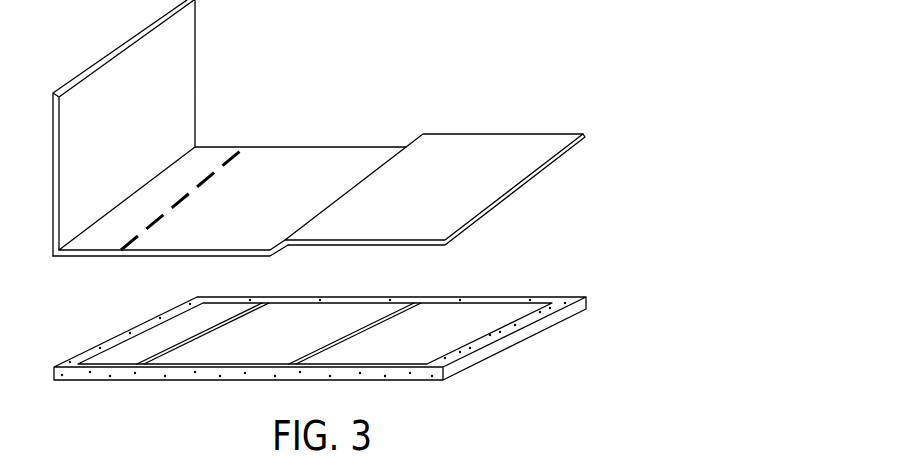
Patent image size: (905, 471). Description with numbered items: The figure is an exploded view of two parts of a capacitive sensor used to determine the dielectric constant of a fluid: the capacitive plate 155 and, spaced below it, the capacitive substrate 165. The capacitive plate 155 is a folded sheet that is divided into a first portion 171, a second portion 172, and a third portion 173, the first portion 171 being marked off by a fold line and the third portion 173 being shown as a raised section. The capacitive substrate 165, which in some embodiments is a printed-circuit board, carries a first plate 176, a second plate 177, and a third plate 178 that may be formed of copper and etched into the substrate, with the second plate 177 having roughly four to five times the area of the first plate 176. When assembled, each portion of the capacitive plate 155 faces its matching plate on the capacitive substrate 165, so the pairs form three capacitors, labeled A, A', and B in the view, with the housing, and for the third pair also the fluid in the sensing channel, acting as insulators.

The capacitive plate 155 is at (326, 128).
The first portion 171 is at (198, 173).
The second portion 172 is at (306, 172).
The third portion 173 is at (463, 159).
The capacitive substrate 165 is at (326, 320).
The first plate 176 is at (112, 356).
The second plate 177 is at (205, 356).
The third plate 178 is at (432, 355).